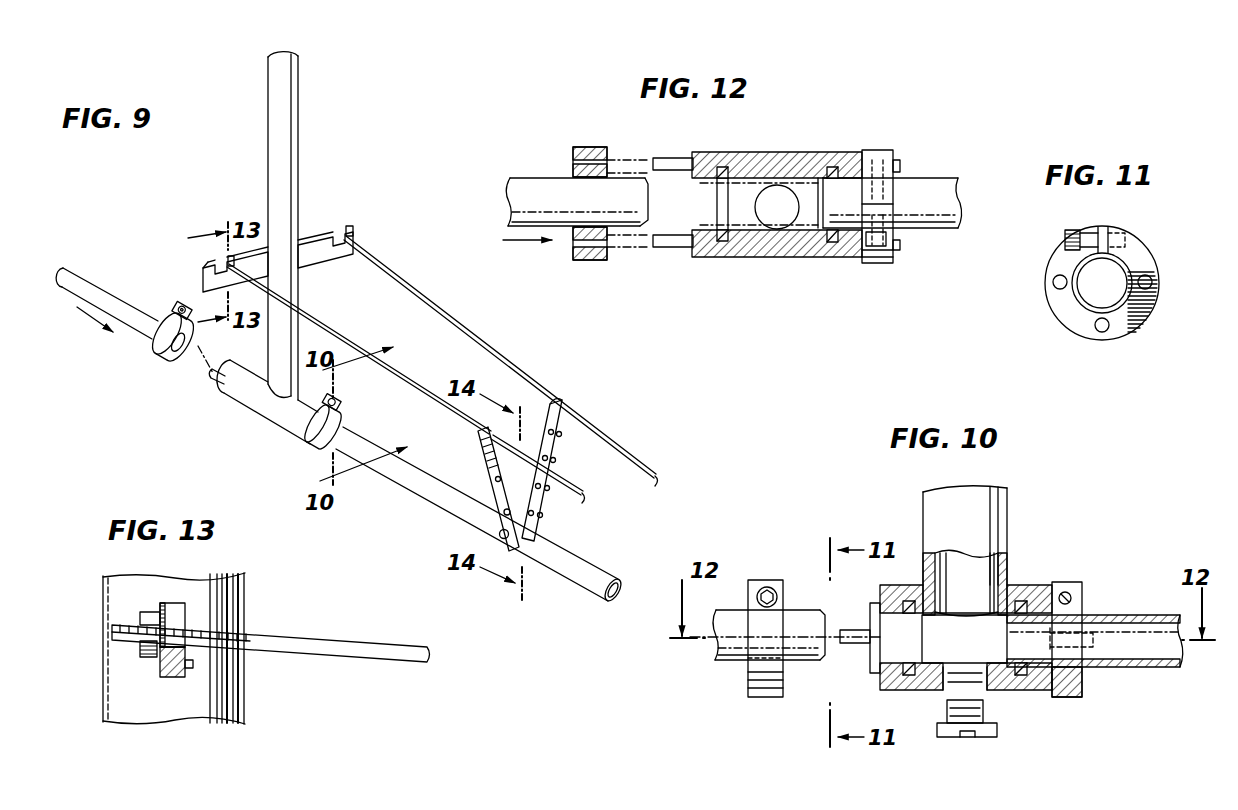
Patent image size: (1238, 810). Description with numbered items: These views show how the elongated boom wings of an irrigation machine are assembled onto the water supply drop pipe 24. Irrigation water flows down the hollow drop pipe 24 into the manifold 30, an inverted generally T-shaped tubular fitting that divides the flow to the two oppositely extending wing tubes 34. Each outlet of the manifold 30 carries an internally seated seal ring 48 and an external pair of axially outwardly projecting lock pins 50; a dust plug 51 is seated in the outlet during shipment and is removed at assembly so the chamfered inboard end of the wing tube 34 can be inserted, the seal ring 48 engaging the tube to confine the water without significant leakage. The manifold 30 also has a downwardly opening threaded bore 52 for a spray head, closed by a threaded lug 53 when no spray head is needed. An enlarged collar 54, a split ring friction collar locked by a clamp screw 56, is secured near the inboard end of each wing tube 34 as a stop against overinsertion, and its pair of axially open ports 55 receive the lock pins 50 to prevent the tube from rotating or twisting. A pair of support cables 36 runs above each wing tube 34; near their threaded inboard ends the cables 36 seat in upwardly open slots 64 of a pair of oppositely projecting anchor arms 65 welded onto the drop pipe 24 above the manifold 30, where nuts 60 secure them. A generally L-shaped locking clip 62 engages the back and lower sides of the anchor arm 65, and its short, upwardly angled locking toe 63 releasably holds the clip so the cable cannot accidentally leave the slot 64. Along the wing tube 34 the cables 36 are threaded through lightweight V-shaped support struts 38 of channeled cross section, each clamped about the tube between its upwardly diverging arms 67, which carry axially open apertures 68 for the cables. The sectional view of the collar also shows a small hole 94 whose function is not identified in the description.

In FIG. 9, the drop pipe 24 is at (289, 112).
In FIG. 13, the drop pipe 24 is at (103, 661).
In FIG. 10, the drop pipe 24 is at (1010, 508).
In FIG. 9, the manifold 30 is at (253, 403).
In FIG. 12, the manifold 30 is at (740, 250).
In FIG. 10, the manifold 30 is at (927, 680).
In FIG. 9, the wing tube 34 is at (82, 279).
In FIG. 12, the wing tube 34 is at (525, 183).
In FIG. 11, the wing tube 34 is at (1075, 290).
In FIG. 10, the wing tube 34 is at (723, 660).
In FIG. 9, the cable 36 is at (458, 331).
In FIG. 13, the cable 36 is at (350, 648).
In FIG. 9, the support strut 38 is at (554, 474).
In FIG. 12, the seal ring 48 is at (725, 167).
In FIG. 10, the seal ring 48 is at (1022, 601).
In FIG. 9, the lock pin 50 is at (214, 378).
In FIG. 12, the lock pin 50 is at (665, 158).
In FIG. 10, the lock pin 50 is at (853, 636).
In FIG. 10, the dust plug 51 is at (890, 642).
In FIG. 12, the threaded bore 52 is at (782, 187).
In FIG. 10, the threaded bore 52 is at (980, 662).
In FIG. 10, the threaded lug 53 is at (985, 713).
In FIG. 9, the collar 54 is at (153, 353).
In FIG. 12, the collar 54 is at (585, 260).
In FIG. 11, the collar 54 is at (1135, 322).
In FIG. 10, the collar 54 is at (767, 687).
In FIG. 12, the port 55 is at (575, 160).
In FIG. 11, the port 55 is at (1148, 277).
In FIG. 12, the clamp screw 56 is at (872, 246).
In FIG. 11, the clamp screw 56 is at (1072, 230).
In FIG. 13, the nut 60 is at (143, 616).
In FIG. 13, the locking clip 62 is at (160, 665).
In FIG. 13, the locking toe 63 is at (193, 666).
In FIG. 9, the slot 64 is at (353, 228).
In FIG. 13, the slot 64 is at (180, 612).
In FIG. 9, the anchor arm 65 is at (313, 243).
In FIG. 13, the anchor arm 65 is at (175, 680).
In FIG. 9, the arm 67 is at (483, 452).
In FIG. 9, the aperture 68 is at (500, 513).
In FIG. 11, the hole 94 is at (1098, 327).